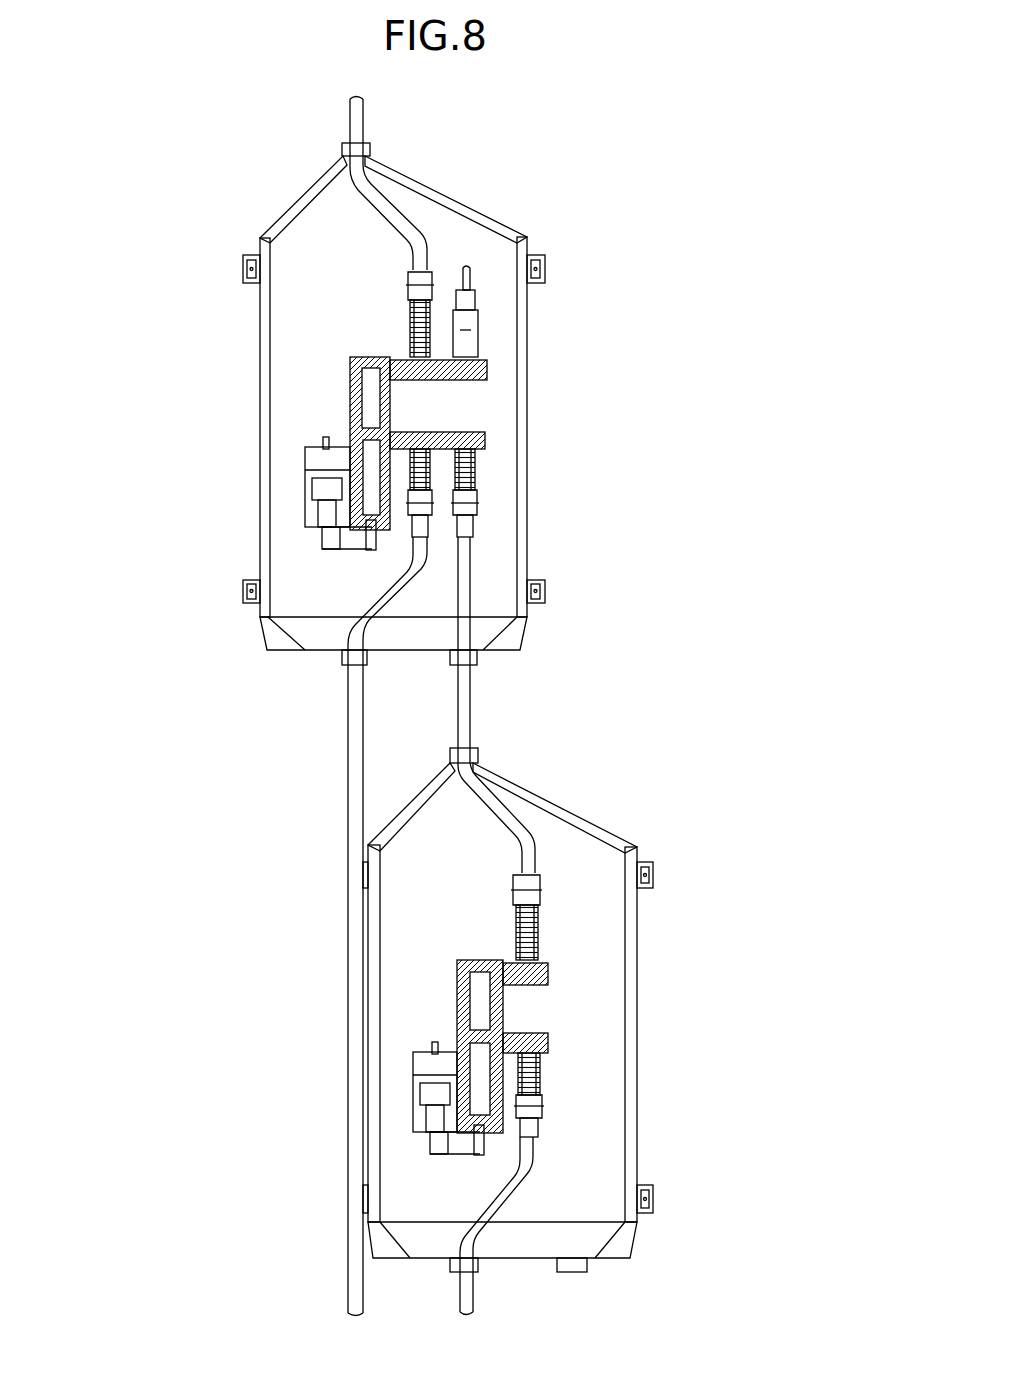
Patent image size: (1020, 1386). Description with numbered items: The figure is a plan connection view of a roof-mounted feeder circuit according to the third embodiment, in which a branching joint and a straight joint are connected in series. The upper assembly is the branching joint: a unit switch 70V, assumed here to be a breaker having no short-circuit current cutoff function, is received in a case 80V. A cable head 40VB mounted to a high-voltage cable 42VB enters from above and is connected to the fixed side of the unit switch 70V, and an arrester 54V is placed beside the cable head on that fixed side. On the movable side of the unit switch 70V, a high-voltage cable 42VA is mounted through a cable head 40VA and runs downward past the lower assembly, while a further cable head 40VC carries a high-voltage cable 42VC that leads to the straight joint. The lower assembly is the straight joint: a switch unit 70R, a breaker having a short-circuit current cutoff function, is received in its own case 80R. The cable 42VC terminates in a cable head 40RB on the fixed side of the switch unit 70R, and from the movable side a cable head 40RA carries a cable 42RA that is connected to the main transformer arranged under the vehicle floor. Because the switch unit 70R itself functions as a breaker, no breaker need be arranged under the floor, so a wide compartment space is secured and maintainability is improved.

The high-voltage cable 42VB is at (340, 133).
The cable head 40VB is at (425, 248).
The case 80V is at (510, 235).
The arrester 54V is at (465, 350).
The unit switch 70V is at (293, 443).
The cable head 40VA is at (430, 488).
The cable head 40VC is at (455, 517).
The high-voltage cable 42VC is at (463, 590).
The high-voltage cable 42VA is at (345, 768).
The cable head 40RB is at (533, 905).
The case 80R is at (610, 828).
The switch unit 70R is at (578, 1030).
The cable head 40RA is at (537, 1090).
The cable 42RA is at (470, 1303).